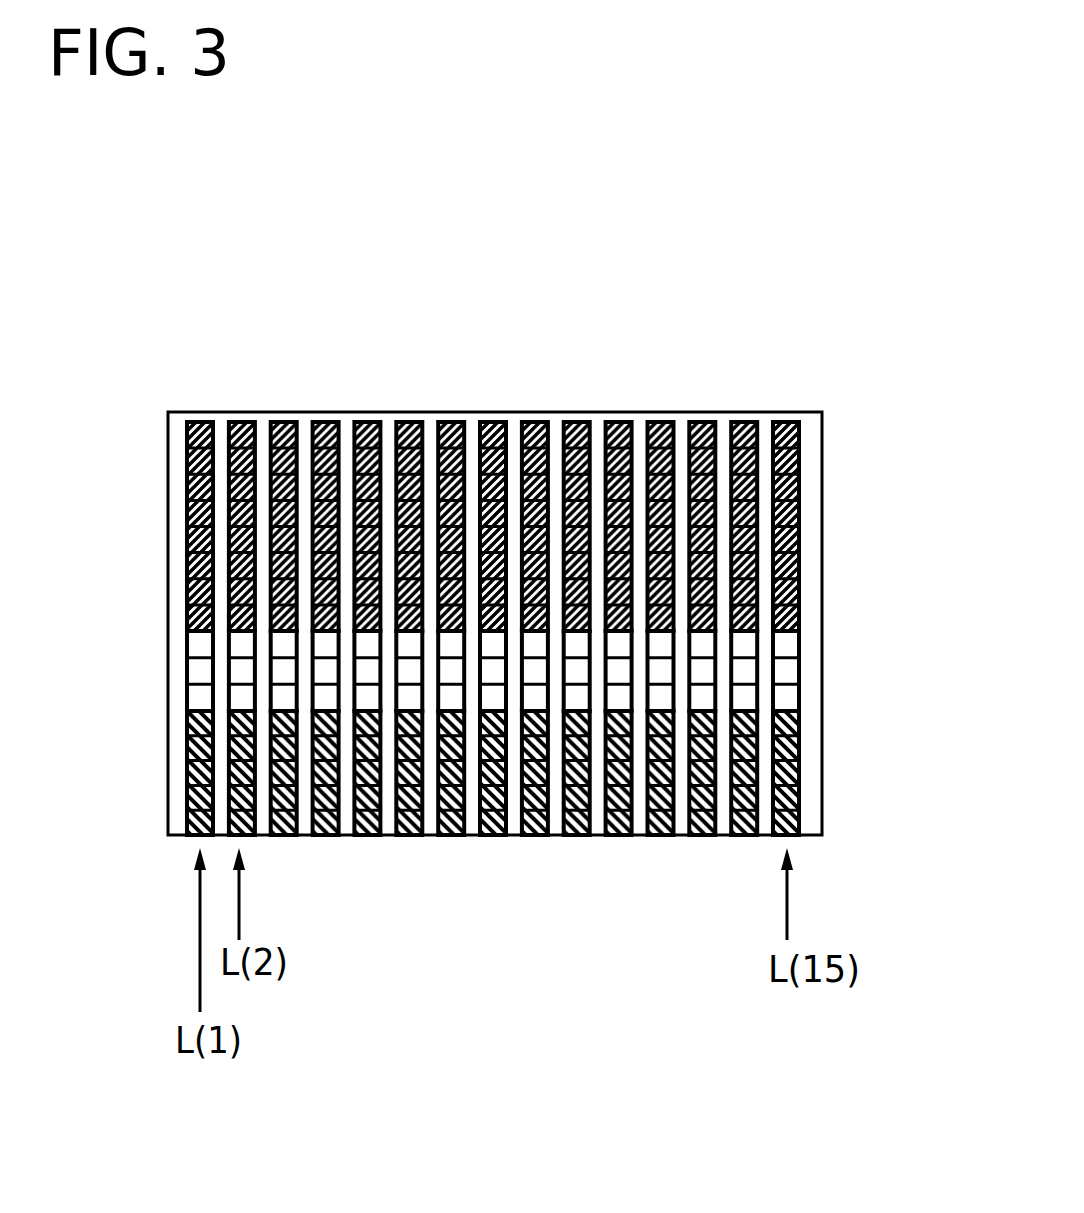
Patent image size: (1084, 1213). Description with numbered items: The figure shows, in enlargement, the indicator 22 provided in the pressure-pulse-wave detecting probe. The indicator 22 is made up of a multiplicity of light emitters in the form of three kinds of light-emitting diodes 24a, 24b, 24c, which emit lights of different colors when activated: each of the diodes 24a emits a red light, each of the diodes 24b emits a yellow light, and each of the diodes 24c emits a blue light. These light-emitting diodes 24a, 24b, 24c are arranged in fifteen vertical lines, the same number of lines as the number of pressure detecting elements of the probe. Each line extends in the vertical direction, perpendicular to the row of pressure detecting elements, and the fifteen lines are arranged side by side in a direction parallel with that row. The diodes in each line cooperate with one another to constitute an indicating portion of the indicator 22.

The indicator 22 is at (630, 258).
The light-emitting diodes 24a is at (798, 717).
The light-emitting diodes 24b is at (788, 640).
The light-emitting diodes 24c is at (790, 428).